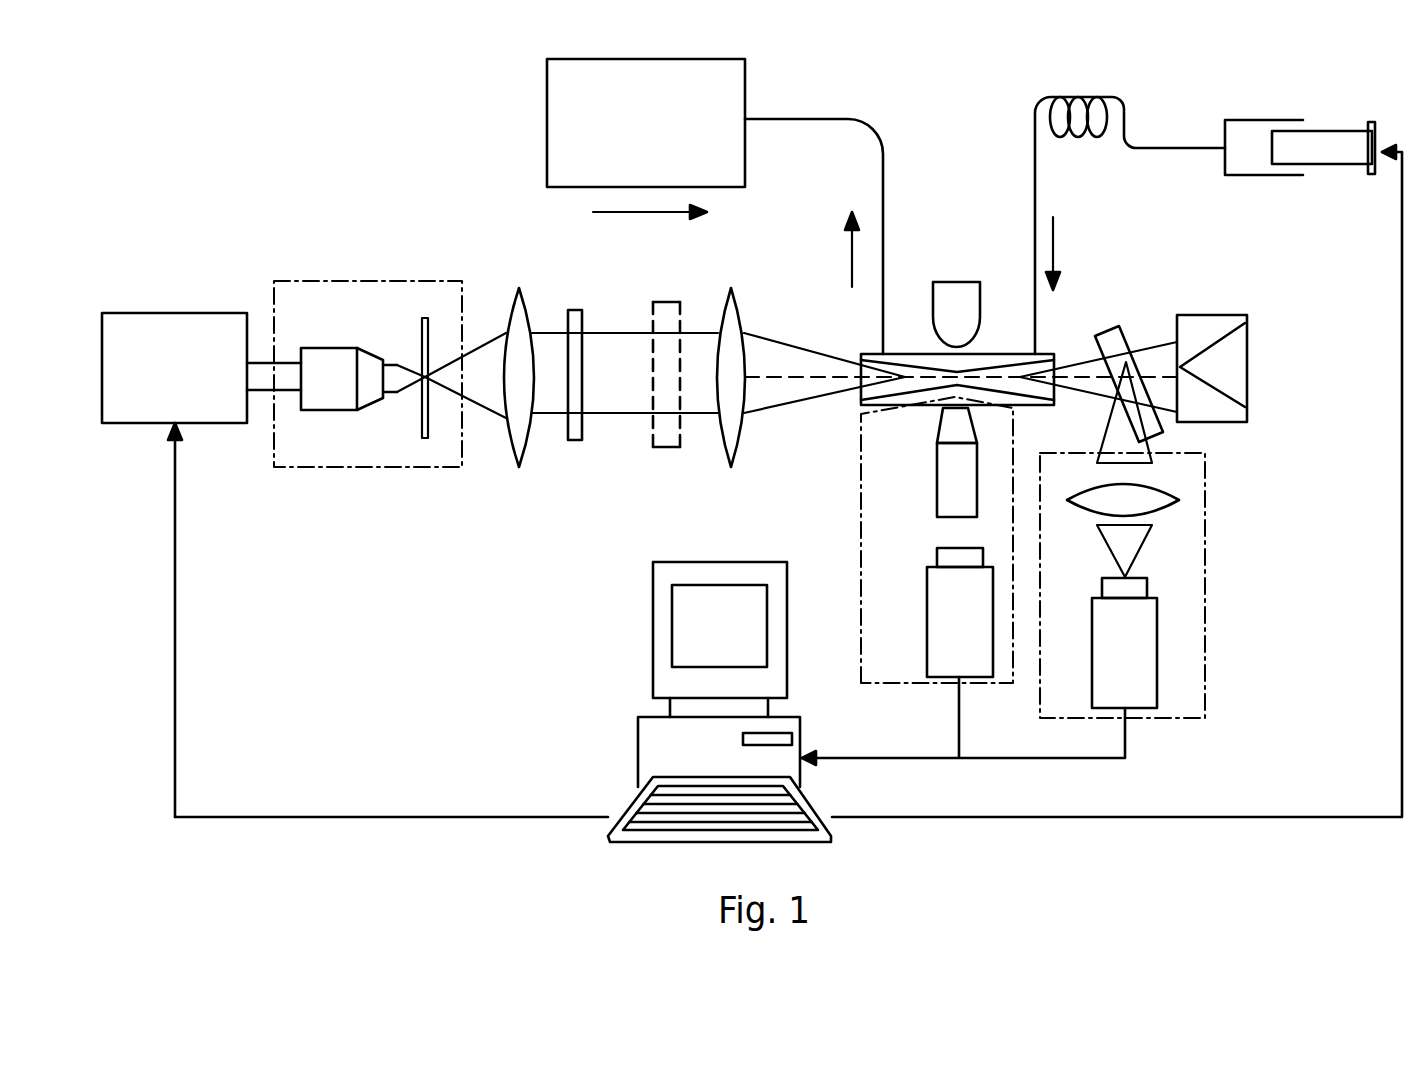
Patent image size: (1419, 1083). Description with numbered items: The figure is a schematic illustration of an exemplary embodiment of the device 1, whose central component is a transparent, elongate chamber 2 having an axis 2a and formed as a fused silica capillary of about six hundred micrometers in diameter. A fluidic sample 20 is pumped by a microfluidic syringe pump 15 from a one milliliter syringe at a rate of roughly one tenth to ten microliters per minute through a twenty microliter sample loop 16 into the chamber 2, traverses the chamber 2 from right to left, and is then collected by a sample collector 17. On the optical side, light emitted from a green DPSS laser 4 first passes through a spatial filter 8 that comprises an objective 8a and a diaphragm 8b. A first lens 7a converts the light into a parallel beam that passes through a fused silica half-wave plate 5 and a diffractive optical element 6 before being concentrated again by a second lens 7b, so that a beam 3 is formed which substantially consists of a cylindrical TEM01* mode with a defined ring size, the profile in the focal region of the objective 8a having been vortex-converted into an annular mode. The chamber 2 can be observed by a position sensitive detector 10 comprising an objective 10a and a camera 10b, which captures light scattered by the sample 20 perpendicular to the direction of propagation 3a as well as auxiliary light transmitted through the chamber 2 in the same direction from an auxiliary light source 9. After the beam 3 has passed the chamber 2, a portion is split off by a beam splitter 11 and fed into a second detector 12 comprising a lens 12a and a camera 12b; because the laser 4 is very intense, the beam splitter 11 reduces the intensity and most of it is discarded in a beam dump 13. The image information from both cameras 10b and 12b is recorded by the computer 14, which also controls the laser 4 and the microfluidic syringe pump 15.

The device 1 is at (210, 120).
The chamber 2 is at (908, 358).
The axis 2a is at (792, 377).
The beam 3 is at (773, 333).
The direction of propagation 3a is at (658, 213).
The laser 4 is at (177, 312).
The half-wave plate 5 is at (572, 440).
The diffractive optical element 6 is at (660, 447).
The first lens 7a is at (520, 467).
The second lens 7b is at (730, 467).
The spatial filter 8 is at (368, 361).
The objective 8a is at (320, 400).
The diaphragm 8b is at (425, 318).
The auxiliary light source 9 is at (967, 280).
The position sensitive detector 10 is at (926, 577).
The objective 10a is at (937, 487).
The camera 10b is at (927, 633).
The beam splitter 11 is at (1130, 340).
The second detector 12 is at (1178, 585).
The lens 12a is at (1177, 499).
The camera 12b is at (1158, 650).
The beam dump 13 is at (1210, 315).
The computer 14 is at (627, 807).
The microfluidic syringe pump 15 is at (1267, 120).
The sample loop 16 is at (1052, 98).
The sample collector 17 is at (547, 105).
The fluidic sample 20 is at (848, 247).